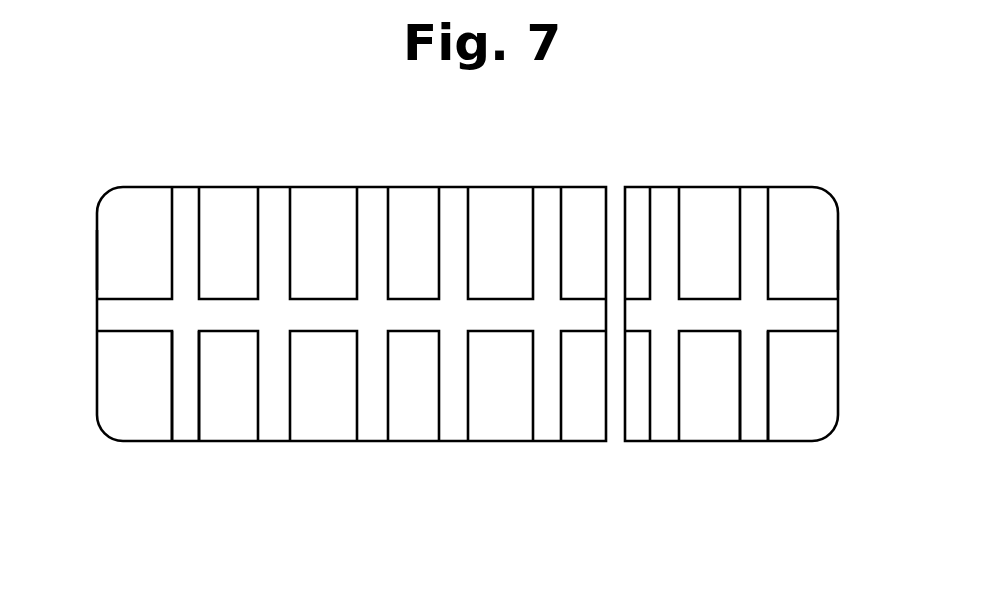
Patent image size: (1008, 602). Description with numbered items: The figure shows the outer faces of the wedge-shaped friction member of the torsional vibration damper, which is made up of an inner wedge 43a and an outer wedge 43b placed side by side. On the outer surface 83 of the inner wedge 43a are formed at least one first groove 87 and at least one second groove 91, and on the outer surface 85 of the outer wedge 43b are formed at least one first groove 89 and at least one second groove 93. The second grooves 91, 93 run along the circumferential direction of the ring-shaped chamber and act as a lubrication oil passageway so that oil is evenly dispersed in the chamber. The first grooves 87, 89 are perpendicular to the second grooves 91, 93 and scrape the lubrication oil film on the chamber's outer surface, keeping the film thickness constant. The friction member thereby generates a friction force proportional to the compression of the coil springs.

The inner wedge 43a is at (737, 154).
The outer wedge 43b is at (486, 154).
The outer surface of the inner wedge 83 is at (837, 253).
The outer surface of the outer wedge 85 is at (99, 252).
The first groove 87 is at (754, 437).
The first groove 89 is at (182, 437).
The second groove 91 is at (837, 317).
The second groove 93 is at (99, 317).